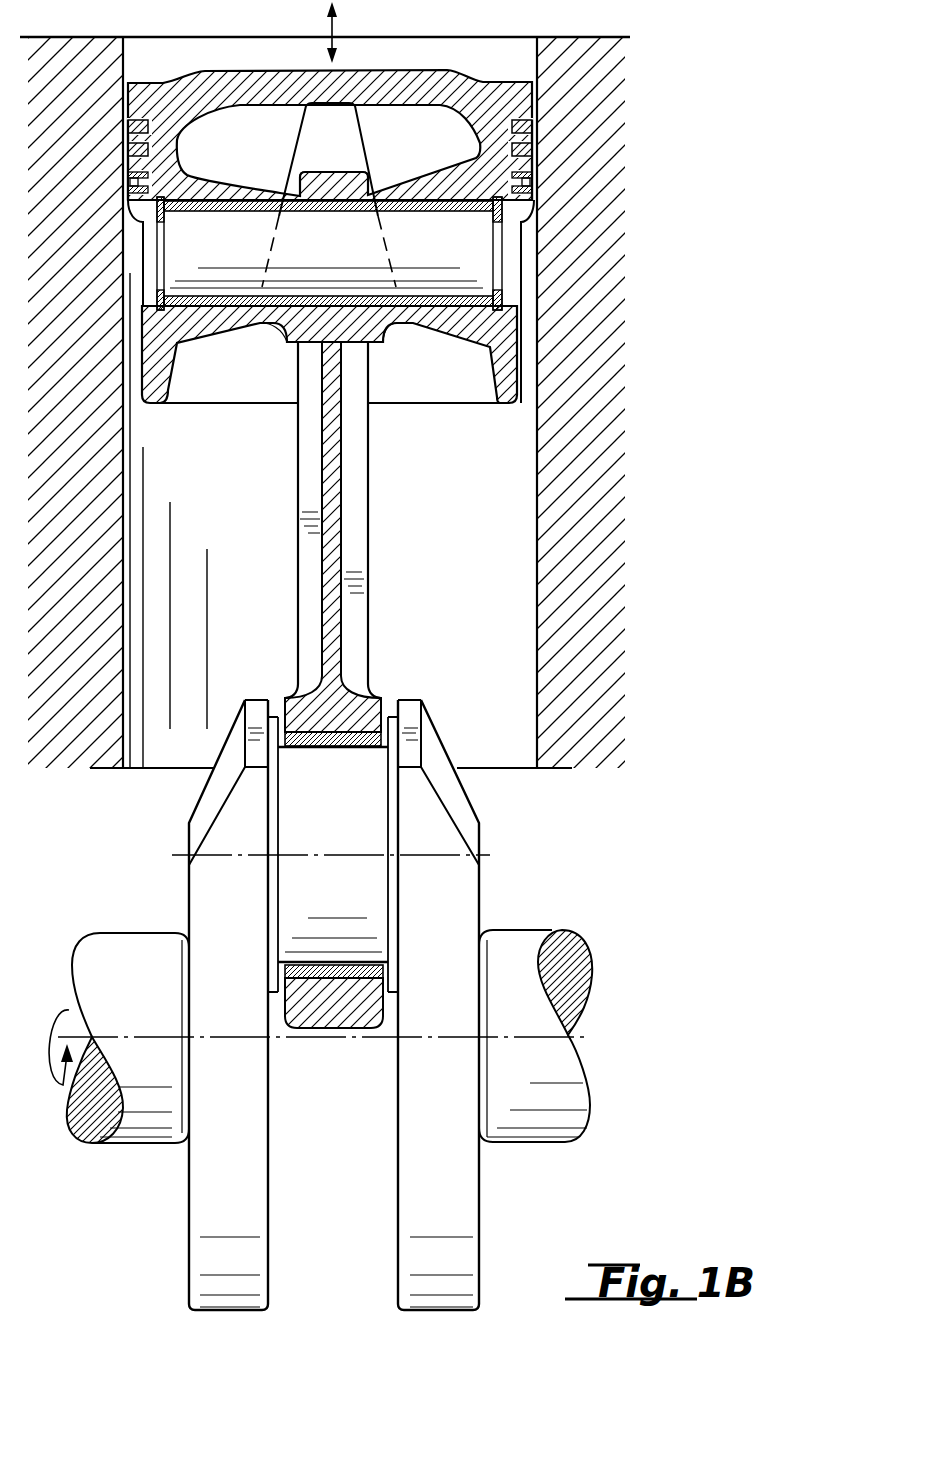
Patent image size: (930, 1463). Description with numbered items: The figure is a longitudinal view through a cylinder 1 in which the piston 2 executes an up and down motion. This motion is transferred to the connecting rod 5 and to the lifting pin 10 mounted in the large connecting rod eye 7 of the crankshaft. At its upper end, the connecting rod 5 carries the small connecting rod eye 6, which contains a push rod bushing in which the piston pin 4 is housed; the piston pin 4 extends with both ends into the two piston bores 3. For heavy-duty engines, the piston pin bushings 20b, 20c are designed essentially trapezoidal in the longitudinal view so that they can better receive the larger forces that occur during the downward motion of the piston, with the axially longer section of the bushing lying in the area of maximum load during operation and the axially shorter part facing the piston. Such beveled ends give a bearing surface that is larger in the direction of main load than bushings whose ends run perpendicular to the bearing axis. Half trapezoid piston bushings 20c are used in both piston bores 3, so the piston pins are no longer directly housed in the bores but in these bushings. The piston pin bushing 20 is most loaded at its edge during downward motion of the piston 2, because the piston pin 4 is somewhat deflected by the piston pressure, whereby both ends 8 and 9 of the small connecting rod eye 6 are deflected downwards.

The cylinder 1 is at (555, 504).
The piston 2 is at (512, 353).
The piston bores 3 is at (513, 280).
The piston pin 4 is at (483, 237).
The connecting rod 5 is at (380, 536).
The small connecting rod eye 6 is at (355, 185).
The large connecting rod eye 7 is at (340, 1013).
The end of the small end connecting rod eye 8 is at (265, 327).
The end of the small end connecting rod eye 9 is at (385, 325).
The lifting pin 10 is at (377, 883).
The piston pin bushing 20 is at (330, 135).
The piston pin bushing 20b is at (310, 193).
The half trapezoid piston bushing 20c is at (207, 330).